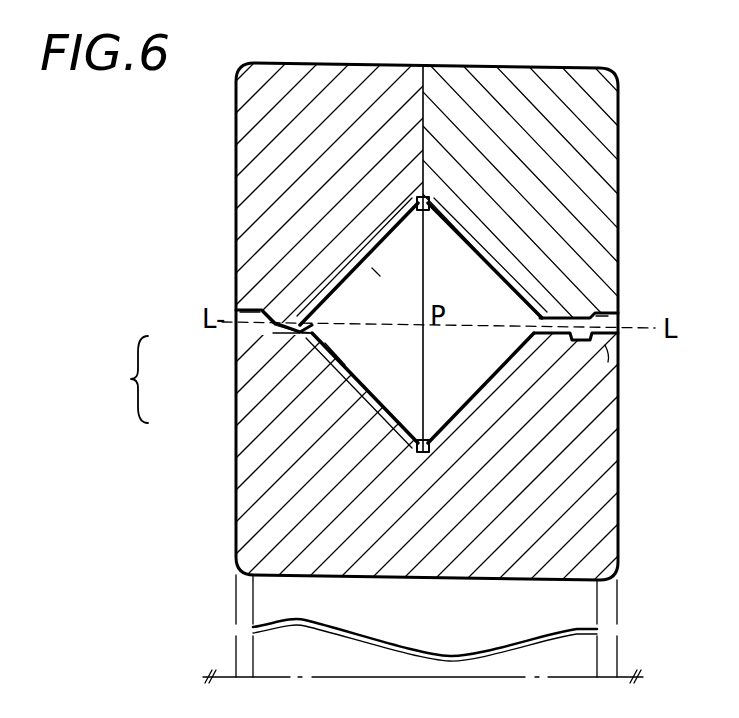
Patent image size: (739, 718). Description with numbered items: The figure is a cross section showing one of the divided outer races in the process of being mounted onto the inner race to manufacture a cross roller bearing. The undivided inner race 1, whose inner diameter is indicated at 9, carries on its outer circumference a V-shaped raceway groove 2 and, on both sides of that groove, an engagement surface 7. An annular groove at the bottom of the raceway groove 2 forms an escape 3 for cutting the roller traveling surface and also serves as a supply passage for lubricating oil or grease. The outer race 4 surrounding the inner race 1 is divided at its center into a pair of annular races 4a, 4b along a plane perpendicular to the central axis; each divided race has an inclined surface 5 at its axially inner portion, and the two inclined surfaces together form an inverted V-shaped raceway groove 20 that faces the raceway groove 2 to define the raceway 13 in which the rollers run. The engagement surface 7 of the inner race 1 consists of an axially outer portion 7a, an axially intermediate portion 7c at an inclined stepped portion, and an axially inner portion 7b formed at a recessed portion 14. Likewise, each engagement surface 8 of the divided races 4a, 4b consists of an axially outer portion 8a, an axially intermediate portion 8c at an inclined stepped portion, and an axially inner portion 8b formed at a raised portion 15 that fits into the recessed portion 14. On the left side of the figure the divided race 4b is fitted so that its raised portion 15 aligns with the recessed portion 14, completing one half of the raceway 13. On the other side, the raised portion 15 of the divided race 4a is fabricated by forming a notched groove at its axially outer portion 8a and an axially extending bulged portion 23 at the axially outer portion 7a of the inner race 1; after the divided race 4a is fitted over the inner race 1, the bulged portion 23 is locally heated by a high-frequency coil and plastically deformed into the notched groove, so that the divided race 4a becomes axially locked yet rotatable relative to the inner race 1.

The inner race 1 is at (560, 508).
The raceway groove 2 is at (412, 410).
The escape 3 is at (425, 452).
The outer race 4 is at (618, 123).
The divided outer race 4a is at (570, 165).
The divided outer race 4b is at (275, 182).
The inclined surface 5 is at (396, 236).
The engagement surface 7 is at (302, 326).
The axially outer portion 7a is at (268, 320).
The axially inner portion 7b is at (340, 360).
The axially intermediate portion 7c is at (302, 331).
The engagement surface 8 is at (648, 413).
The axially outer portion 8a is at (268, 333).
The axially inner portion 8b is at (258, 348).
The axially intermediate portion 8c is at (262, 340).
The inner diameter 9 is at (520, 582).
The raceway 13 is at (377, 272).
The recessed portion 14 is at (308, 334).
The raised portion 15 is at (270, 313).
The raceway groove 20 is at (431, 238).
The bulged portion 23 is at (608, 356).